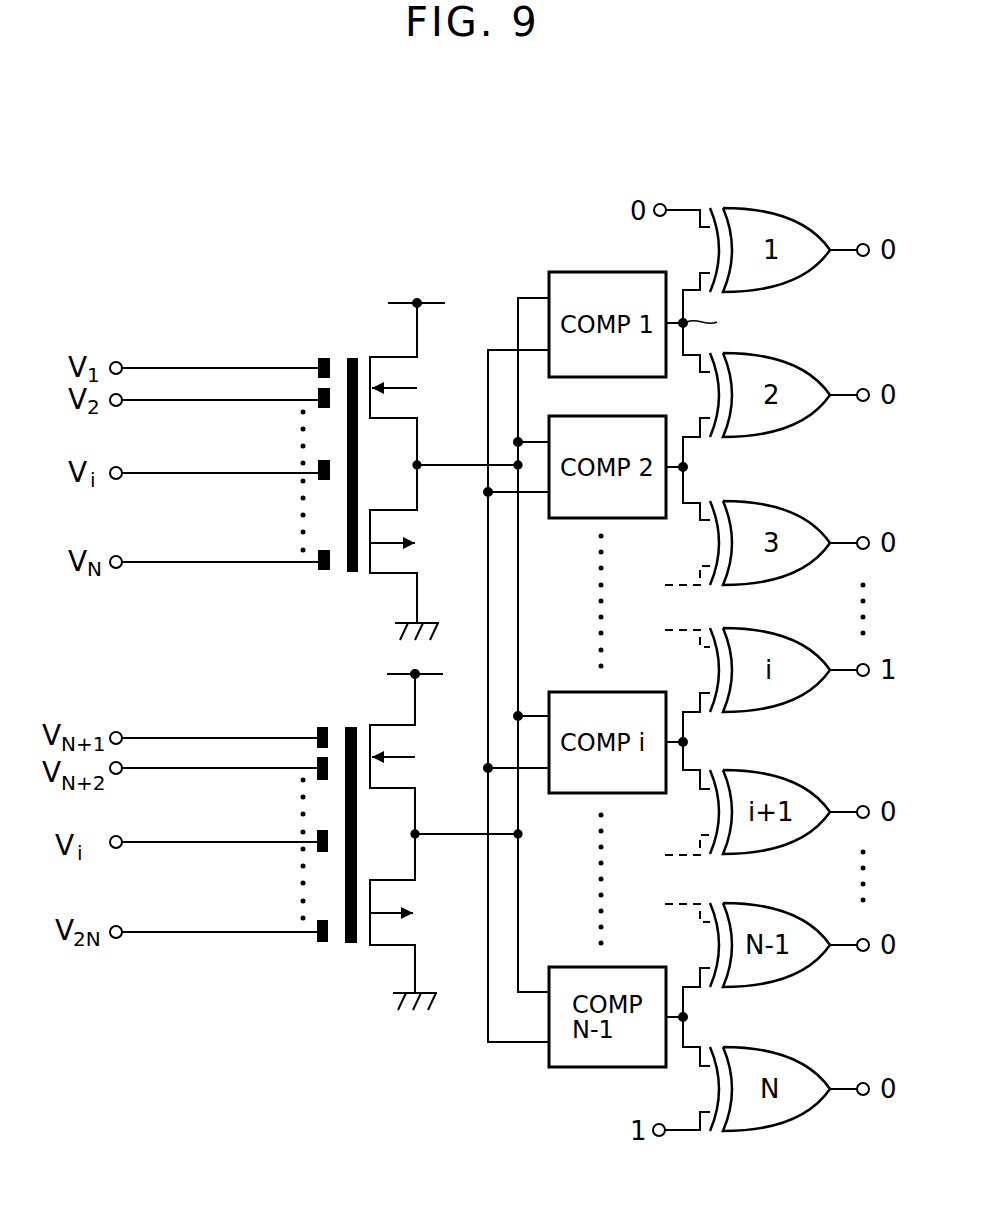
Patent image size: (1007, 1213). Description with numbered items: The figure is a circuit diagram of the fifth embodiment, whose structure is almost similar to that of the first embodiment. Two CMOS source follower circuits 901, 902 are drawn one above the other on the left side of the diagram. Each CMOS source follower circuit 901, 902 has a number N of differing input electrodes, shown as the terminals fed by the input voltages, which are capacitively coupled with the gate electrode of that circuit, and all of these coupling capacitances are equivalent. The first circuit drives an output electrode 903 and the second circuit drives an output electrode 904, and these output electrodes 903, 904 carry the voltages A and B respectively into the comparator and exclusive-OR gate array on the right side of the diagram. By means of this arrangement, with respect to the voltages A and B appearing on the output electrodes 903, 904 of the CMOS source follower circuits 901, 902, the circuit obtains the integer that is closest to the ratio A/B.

The CMOS source follower circuit 901 is at (392, 348).
The CMOS source follower circuit 902 is at (380, 953).
The output electrode 903 is at (419, 465).
The output electrode 904 is at (452, 838).